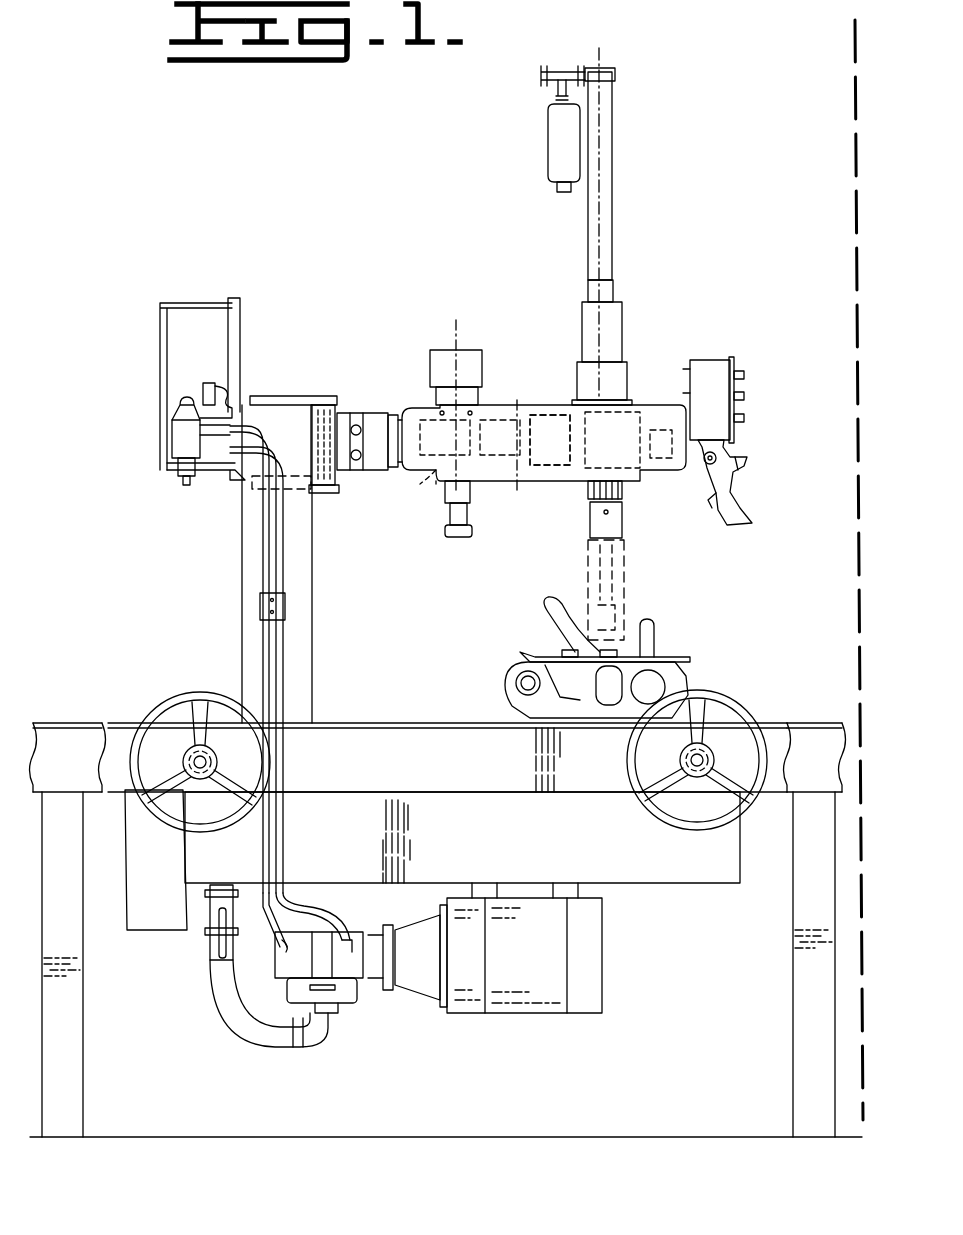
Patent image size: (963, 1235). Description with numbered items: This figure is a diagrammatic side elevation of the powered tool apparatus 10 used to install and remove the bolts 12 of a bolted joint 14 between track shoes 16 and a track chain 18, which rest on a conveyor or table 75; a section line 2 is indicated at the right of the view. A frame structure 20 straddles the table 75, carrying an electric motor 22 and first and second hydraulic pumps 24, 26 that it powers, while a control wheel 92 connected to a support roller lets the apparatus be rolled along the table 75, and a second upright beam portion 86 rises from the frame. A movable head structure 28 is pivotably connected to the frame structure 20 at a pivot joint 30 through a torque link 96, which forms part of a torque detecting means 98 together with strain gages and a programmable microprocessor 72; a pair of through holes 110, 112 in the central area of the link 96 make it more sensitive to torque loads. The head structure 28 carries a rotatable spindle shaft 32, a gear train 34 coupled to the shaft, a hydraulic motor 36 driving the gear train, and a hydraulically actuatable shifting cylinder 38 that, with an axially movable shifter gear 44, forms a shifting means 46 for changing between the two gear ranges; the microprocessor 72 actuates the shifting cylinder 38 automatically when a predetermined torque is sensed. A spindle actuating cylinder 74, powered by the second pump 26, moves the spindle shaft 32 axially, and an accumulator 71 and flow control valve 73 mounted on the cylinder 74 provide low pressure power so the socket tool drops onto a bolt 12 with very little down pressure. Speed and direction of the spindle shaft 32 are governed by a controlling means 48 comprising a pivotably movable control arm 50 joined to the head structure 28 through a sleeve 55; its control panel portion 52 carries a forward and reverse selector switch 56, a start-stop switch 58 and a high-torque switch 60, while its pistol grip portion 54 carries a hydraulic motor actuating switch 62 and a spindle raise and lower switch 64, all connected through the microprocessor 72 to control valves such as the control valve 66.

The section line 2- 2 is at (812, 1175).
The powered tool apparatus 10 is at (386, 286).
The bolt 12 is at (548, 598).
The bolted joint 14 is at (590, 668).
The track shoe 16 is at (654, 636).
The track chain 18 is at (686, 676).
The frame structure 20 is at (244, 638).
The electric motor 22 is at (485, 955).
The first hydraulic pump 24 is at (362, 940).
The second hydraulic pump 26 is at (270, 972).
The movable head structure 28 is at (541, 482).
The pivot joint 30 is at (322, 404).
The rotatable spindle shaft 32 is at (624, 488).
The gear train 34 is at (538, 418).
The hydraulic motor 36 is at (466, 352).
The hydraulically actuatable shifting cylinder 38 is at (448, 528).
The axially movable shifter gear 44 is at (418, 488).
The shifting means 46 is at (438, 480).
The controlling means 48 is at (754, 419).
The pivotably movable control arm 50 is at (672, 376).
The control panel portion 52 is at (732, 358).
The pistol grip portion 54 is at (740, 504).
The sleeve 55 is at (620, 366).
The forward and reverse selector switch 56 is at (744, 375).
The start-stop switch 58 is at (744, 396).
The high-torque switch 60 is at (744, 418).
The hydraulic motor actuating switch 62 is at (714, 500).
The spindle raise and lower switch 64 is at (745, 462).
The control valve 66 is at (178, 450).
The accumulator 71 is at (550, 140).
The programmable microprocessor 72 is at (200, 384).
The flow control valve 73 is at (614, 74).
The spindle actuating cylinder 74 is at (612, 202).
The table 75 is at (78, 723).
The second upright beam portion 86 is at (240, 548).
The control wheel 92 is at (152, 700).
The torque link 96 is at (390, 412).
The torque detecting means 98 is at (318, 402).
The through hole 110 is at (344, 438).
The through hole 112 is at (326, 489).